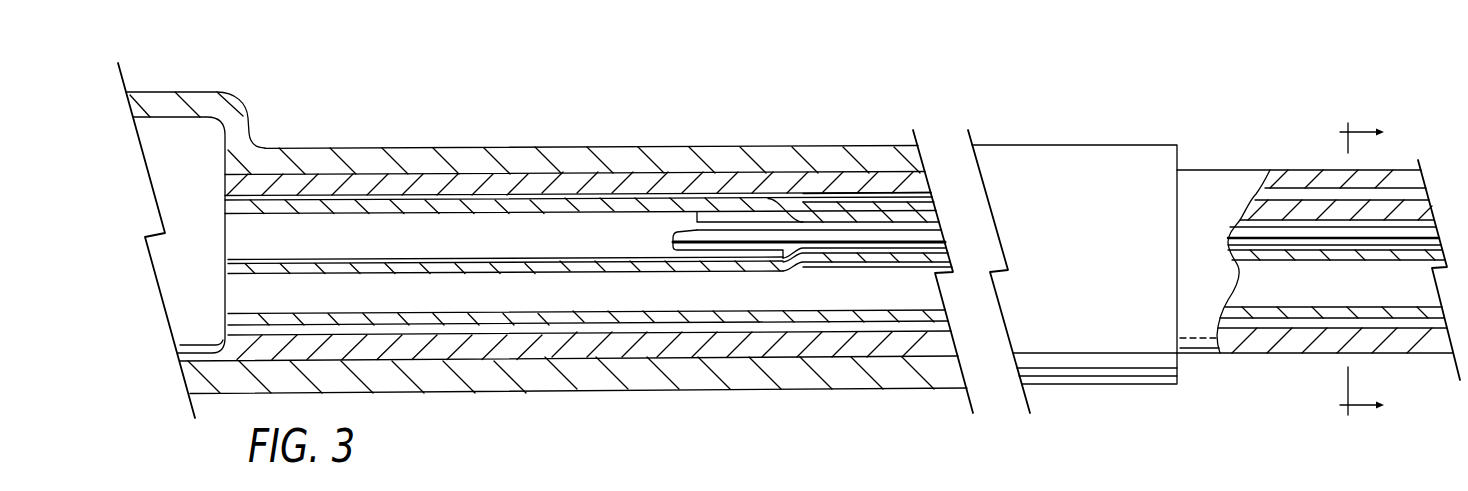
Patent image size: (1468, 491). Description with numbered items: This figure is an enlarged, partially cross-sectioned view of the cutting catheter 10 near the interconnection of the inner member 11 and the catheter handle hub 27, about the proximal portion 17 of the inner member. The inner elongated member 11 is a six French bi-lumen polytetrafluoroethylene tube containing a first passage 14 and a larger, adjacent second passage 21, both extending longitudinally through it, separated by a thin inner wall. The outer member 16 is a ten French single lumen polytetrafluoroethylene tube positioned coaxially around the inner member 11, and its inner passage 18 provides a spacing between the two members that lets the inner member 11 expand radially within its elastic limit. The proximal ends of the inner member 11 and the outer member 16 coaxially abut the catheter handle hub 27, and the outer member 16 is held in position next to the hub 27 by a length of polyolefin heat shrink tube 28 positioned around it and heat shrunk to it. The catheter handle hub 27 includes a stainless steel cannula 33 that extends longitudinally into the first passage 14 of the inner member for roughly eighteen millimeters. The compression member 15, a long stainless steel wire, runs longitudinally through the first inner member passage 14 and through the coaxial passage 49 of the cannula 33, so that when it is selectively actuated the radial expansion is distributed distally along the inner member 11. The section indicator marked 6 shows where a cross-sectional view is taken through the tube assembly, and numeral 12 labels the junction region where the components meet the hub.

The cutting catheter 10 is at (1076, 77).
The inner member 11 is at (452, 205).
The coupling body junction 12 is at (272, 130).
The first passage 14 is at (873, 222).
The compression member 15 is at (738, 238).
The outer member 16 is at (827, 173).
The proximal portion 17 is at (1236, 156).
The inner passage 18 is at (850, 197).
The second passage 21 is at (777, 298).
The catheter handle hub 27 is at (193, 130).
The heat shrink tube 28 is at (345, 148).
The cannula 33 is at (375, 222).
The coaxial passage 49 is at (770, 222).
The section line 6- 6 is at (1374, 268).